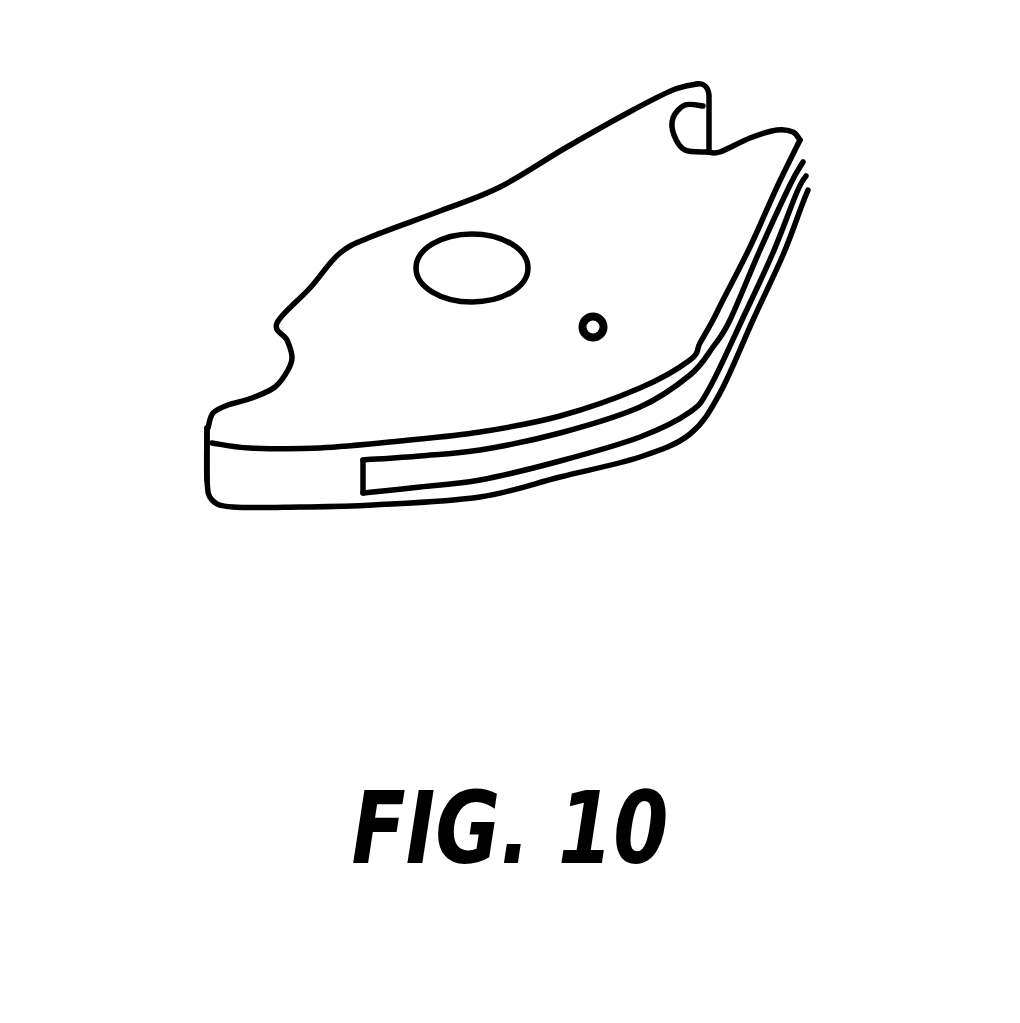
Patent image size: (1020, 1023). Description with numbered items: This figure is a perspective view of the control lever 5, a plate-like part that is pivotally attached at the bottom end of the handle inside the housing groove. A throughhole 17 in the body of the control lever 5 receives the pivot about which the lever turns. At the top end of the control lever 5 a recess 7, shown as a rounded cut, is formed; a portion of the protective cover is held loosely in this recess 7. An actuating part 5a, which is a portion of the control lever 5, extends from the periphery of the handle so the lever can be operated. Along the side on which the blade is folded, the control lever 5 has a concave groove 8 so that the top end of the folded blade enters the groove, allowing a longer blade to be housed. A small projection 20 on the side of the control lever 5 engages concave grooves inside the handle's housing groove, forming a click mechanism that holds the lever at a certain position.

The control lever 5 is at (359, 208).
The actuating part 5a is at (268, 420).
The recess 7 is at (733, 132).
The concave groove 8 is at (541, 452).
The throughhole 17 is at (488, 270).
The small projection 20 is at (607, 325).